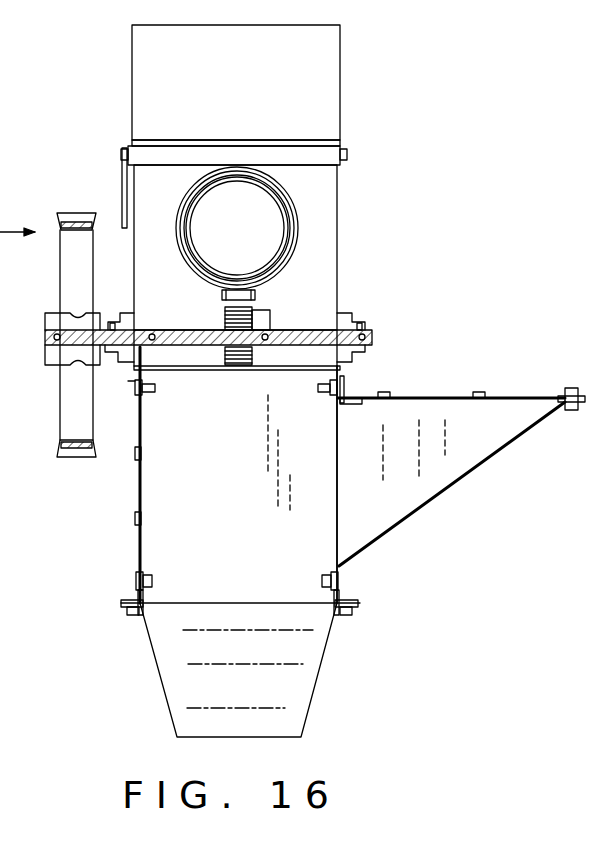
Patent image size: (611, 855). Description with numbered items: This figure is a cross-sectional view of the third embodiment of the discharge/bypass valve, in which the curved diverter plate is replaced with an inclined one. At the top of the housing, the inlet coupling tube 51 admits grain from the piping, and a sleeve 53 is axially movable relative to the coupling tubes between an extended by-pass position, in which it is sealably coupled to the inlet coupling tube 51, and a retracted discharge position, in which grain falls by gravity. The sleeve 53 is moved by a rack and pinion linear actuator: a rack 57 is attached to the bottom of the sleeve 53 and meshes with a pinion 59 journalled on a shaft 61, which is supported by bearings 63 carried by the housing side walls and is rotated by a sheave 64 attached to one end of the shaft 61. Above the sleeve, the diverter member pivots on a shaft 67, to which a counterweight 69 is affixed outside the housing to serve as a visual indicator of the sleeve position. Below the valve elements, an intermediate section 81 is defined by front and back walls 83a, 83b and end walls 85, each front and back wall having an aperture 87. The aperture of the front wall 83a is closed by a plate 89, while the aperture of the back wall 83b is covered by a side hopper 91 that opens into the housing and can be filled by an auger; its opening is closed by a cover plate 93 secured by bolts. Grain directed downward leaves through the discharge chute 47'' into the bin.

The discharge chute 47'' is at (268, 670).
The inlet coupling tube 51 is at (288, 223).
The sleeve 53 is at (288, 205).
The rack 57 is at (257, 293).
The pinion 59 is at (257, 307).
The shaft 61 is at (195, 348).
The bearings 63 is at (118, 318).
The sheave 64 is at (60, 400).
The shaft 67 is at (312, 155).
The counterweight 69 is at (122, 177).
The intermediate section 81 is at (340, 484).
The front wall 83a is at (134, 586).
The back wall 83b is at (342, 382).
The end walls 85 is at (250, 486).
The aperture 87 is at (148, 575).
The plate 89 is at (140, 475).
The side hopper 91 is at (472, 477).
The cover plate 93 is at (505, 398).